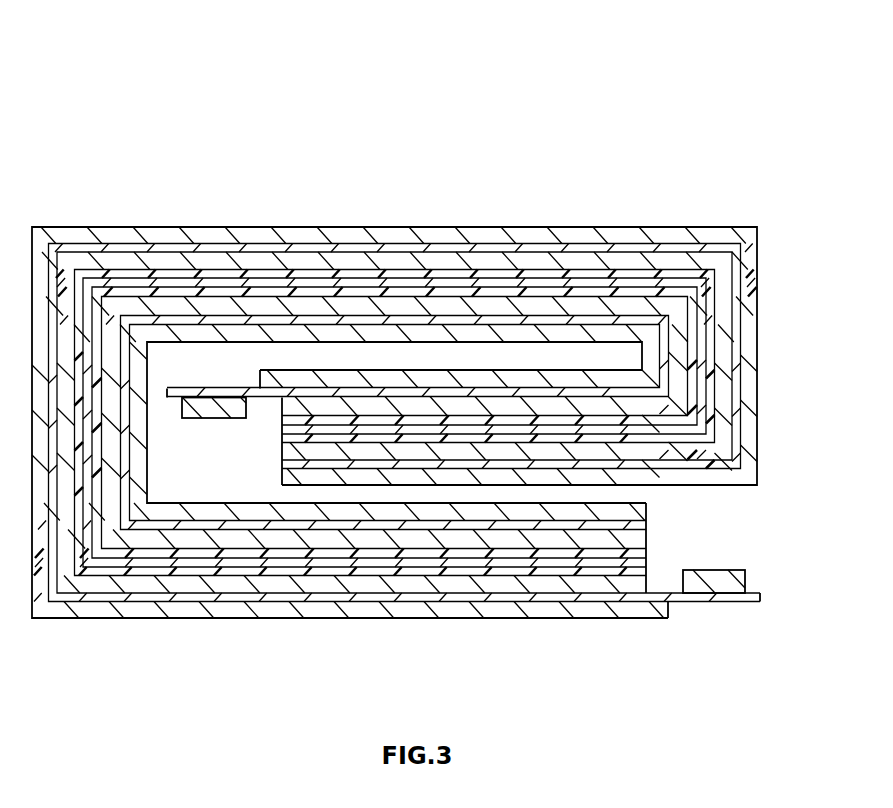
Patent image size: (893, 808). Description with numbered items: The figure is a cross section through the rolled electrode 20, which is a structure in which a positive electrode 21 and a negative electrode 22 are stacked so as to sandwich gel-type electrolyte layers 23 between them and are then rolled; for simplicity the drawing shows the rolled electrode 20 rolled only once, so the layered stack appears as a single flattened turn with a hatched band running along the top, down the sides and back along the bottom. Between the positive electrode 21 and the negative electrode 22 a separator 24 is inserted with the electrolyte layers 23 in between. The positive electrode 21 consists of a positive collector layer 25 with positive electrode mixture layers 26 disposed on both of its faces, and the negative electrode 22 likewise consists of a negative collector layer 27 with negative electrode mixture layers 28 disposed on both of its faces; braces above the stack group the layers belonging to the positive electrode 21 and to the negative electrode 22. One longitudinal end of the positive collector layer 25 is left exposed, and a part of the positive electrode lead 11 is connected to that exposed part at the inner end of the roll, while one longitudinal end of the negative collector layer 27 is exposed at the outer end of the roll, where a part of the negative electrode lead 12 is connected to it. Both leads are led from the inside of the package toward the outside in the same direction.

The positive electrode lead 11 is at (197, 408).
The negative electrode lead 12 is at (722, 583).
The rolled electrode 20 is at (396, 318).
The positive electrode 21 is at (395, 342).
The negative electrode 22 is at (396, 376).
The gel-type electrolyte layer 23 is at (275, 295).
The separator 24 is at (120, 282).
The positive collector layer 25 is at (487, 178).
The positive electrode mixture layer 26 is at (505, 327).
The negative collector layer 27 is at (680, 178).
The negative electrode mixture layer 28 is at (680, 258).